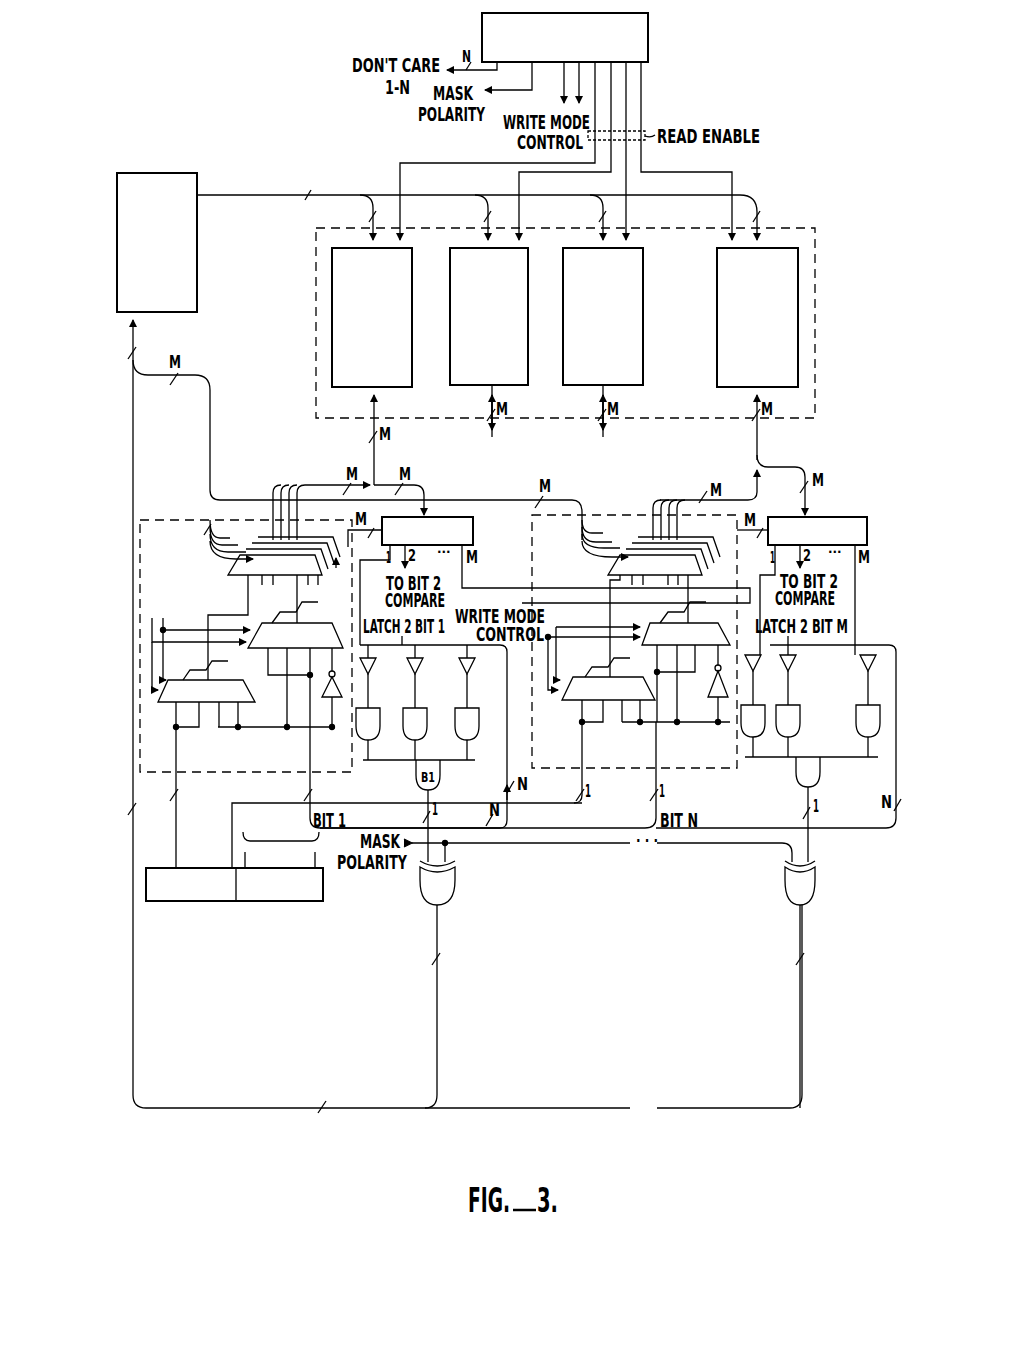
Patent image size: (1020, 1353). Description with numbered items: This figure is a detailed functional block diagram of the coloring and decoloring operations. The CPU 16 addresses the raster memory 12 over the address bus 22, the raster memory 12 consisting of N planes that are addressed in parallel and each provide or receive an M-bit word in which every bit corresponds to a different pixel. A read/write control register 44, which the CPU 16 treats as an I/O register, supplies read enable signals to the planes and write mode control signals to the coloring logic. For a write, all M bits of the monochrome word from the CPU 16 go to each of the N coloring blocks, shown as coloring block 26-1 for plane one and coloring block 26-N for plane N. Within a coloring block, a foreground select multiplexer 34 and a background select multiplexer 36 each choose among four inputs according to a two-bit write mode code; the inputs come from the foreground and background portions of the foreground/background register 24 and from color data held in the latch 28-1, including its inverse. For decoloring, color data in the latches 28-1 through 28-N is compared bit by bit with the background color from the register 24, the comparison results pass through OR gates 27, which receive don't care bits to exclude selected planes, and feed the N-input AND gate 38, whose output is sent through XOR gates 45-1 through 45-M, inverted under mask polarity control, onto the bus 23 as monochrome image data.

The read/write control register 44 is at (648, 30).
The CPU 16 is at (168, 173).
The address bus 22 is at (344, 195).
The raster memory 12 is at (795, 228).
The bus 23 is at (133, 955).
The coloring block 26-1 is at (246, 692).
The coloring block 26-N is at (710, 768).
The background select multiplexer 36 is at (315, 621).
The foreground select multiplexer 34 is at (226, 664).
The latch 28-1 is at (473, 520).
The latch 28-N is at (848, 517).
The OR gates 27 is at (617, 703).
The N-input AND gate 38 is at (820, 781).
The XOR gate 45-1 is at (455, 882).
The XOR gate 45-M is at (815, 882).
The foreground/background register 24 is at (237, 903).